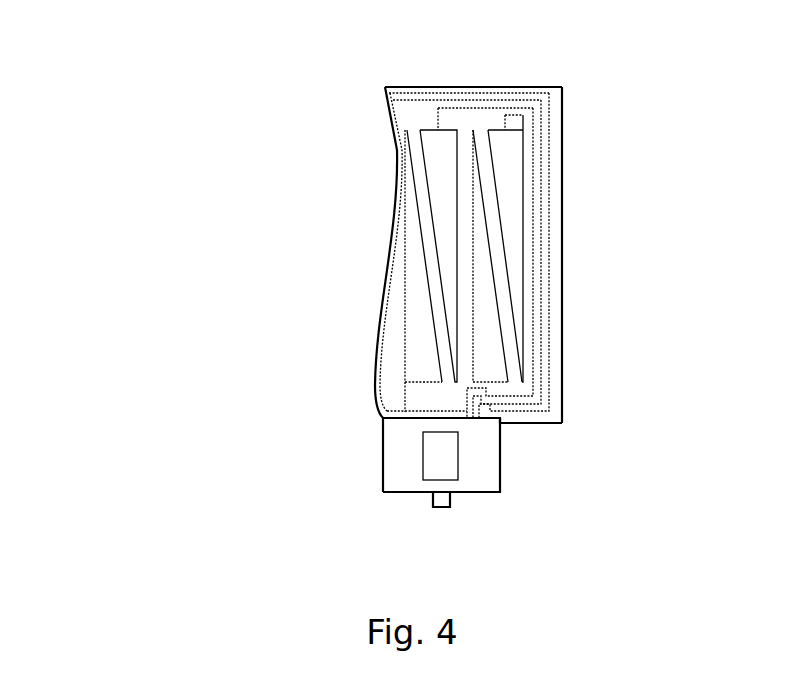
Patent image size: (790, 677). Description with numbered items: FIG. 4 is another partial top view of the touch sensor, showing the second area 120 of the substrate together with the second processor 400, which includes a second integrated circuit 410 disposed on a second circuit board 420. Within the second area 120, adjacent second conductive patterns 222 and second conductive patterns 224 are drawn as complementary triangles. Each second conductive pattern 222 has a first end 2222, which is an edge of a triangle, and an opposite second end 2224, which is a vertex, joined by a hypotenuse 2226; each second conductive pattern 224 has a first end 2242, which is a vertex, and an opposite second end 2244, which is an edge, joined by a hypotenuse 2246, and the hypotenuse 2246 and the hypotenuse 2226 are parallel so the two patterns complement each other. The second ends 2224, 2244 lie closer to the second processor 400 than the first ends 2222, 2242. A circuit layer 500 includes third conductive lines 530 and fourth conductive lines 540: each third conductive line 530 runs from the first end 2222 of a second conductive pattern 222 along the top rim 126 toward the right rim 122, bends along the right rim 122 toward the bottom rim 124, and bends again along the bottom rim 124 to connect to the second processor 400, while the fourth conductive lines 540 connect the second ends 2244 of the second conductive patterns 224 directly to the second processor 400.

The second area 120 is at (382, 408).
The right rim 122 is at (562, 393).
The bottom rim 124 is at (536, 424).
The top rim 126 is at (526, 87).
The second conductive pattern 222 is at (666, 114).
The first end 2222 is at (514, 140).
The second end 2224 is at (524, 381).
The hypotenuse 2226 is at (503, 237).
The second conductive pattern 224 is at (251, 116).
The first end 2242 is at (472, 130).
The second end 2244 is at (480, 380).
The hypotenuse 2246 is at (490, 265).
The second processor 400 is at (508, 548).
The second integrated circuit 410 is at (458, 457).
The second circuit board 420 is at (398, 493).
The circuit layer 500 is at (101, 69).
The third conductive lines 530 is at (518, 114).
The fourth conductive lines 540 is at (405, 402).